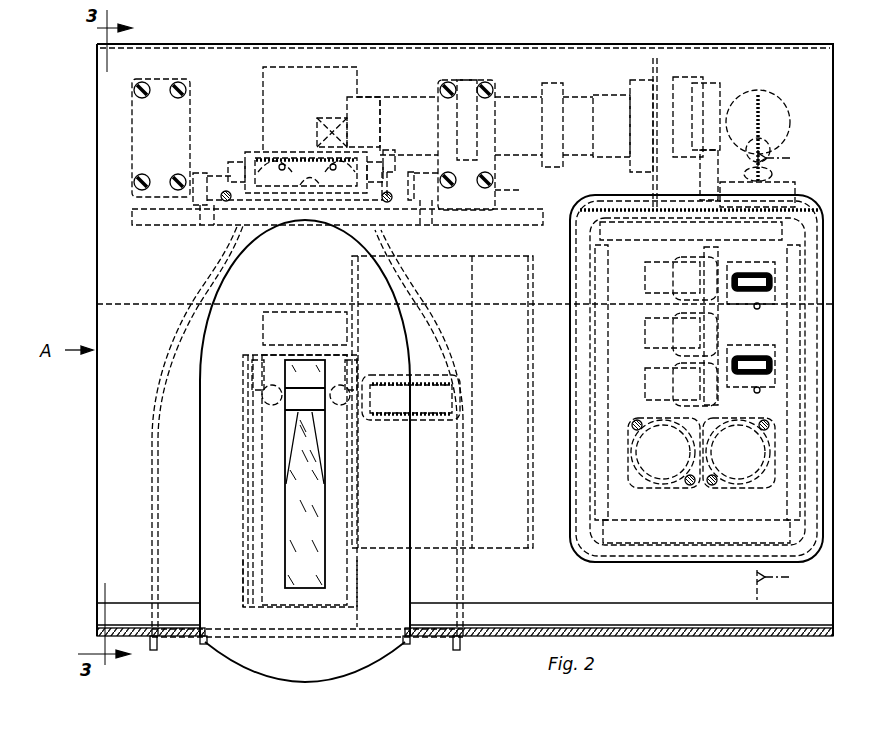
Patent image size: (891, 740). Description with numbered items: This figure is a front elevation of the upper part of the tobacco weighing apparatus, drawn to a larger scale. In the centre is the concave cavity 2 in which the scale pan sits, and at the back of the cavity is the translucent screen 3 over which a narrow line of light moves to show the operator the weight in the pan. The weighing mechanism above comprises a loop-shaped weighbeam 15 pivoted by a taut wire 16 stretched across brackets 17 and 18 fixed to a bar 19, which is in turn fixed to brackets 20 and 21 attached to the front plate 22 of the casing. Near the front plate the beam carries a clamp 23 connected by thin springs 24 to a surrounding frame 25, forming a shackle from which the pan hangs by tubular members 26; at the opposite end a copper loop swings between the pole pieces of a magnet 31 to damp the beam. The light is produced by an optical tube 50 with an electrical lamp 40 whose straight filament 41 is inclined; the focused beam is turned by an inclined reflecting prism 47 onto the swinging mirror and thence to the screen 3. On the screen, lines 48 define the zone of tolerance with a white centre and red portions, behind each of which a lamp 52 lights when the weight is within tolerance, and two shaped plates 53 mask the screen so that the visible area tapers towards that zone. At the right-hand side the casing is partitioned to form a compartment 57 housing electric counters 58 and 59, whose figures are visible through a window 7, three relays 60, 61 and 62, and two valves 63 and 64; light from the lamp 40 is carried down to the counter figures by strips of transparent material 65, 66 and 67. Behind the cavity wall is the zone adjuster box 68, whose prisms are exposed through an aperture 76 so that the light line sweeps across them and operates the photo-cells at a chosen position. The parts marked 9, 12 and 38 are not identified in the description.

The cavity 2 is at (215, 500).
The translucent screen 3 is at (313, 568).
The window 7 is at (740, 282).
The mounting pin 9 is at (466, 642).
The center line marker 12 is at (788, 374).
The weighbeam 15 is at (380, 160).
The taut wire 16 is at (190, 212).
The bracket 17 is at (205, 212).
The bracket 18 is at (424, 208).
The bar 19 is at (508, 228).
The bracket 20 is at (190, 118).
The bracket 21 is at (492, 197).
The front plate 22 is at (833, 128).
The clamp 23 is at (270, 163).
The thin springs 24 is at (296, 163).
The surrounding frame 25 is at (258, 152).
The tubular members 26 is at (462, 421).
The magnet 31 is at (268, 66).
The side wall 38 is at (243, 567).
The electrical lamp 40 is at (782, 110).
The straight filament 41 is at (752, 108).
The reflecting prism 47 is at (333, 117).
The lines 48 is at (285, 410).
The optical tube 50 is at (510, 92).
The lamp 52 is at (258, 380).
The shaped plates 53 is at (335, 452).
The compartment 57 is at (572, 567).
The electric counter 58 is at (738, 326).
The electric counter 59 is at (742, 388).
The relay 60 is at (645, 270).
The relay 61 is at (645, 334).
The relay 62 is at (645, 383).
The valve 63 is at (640, 470).
The valve 64 is at (748, 480).
The strip of transparent material 65 is at (795, 190).
The strip of transparent material 66 is at (775, 283).
The strip of transparent material 67 is at (778, 356).
The box 68 is at (393, 550).
The aperture 76 is at (428, 390).